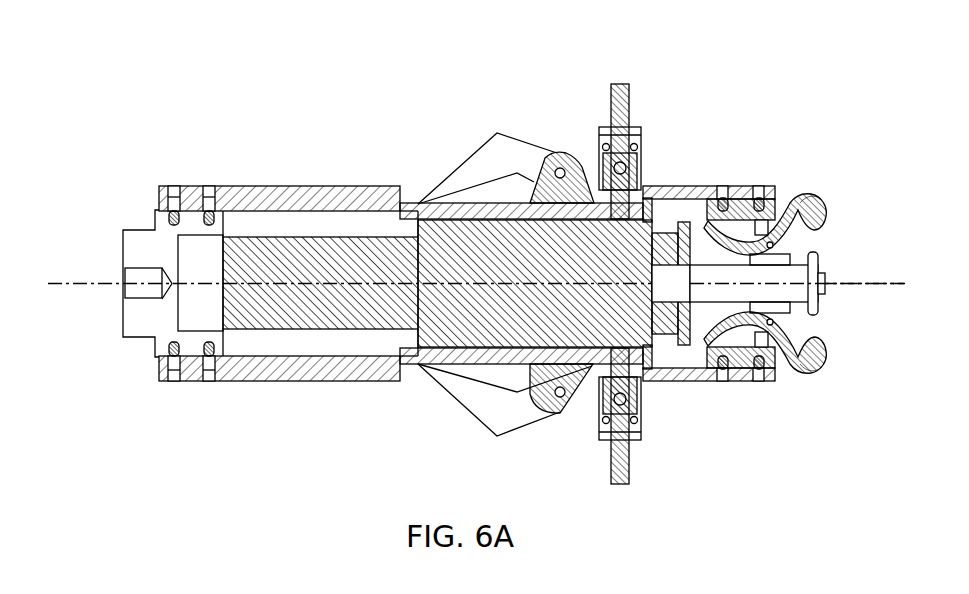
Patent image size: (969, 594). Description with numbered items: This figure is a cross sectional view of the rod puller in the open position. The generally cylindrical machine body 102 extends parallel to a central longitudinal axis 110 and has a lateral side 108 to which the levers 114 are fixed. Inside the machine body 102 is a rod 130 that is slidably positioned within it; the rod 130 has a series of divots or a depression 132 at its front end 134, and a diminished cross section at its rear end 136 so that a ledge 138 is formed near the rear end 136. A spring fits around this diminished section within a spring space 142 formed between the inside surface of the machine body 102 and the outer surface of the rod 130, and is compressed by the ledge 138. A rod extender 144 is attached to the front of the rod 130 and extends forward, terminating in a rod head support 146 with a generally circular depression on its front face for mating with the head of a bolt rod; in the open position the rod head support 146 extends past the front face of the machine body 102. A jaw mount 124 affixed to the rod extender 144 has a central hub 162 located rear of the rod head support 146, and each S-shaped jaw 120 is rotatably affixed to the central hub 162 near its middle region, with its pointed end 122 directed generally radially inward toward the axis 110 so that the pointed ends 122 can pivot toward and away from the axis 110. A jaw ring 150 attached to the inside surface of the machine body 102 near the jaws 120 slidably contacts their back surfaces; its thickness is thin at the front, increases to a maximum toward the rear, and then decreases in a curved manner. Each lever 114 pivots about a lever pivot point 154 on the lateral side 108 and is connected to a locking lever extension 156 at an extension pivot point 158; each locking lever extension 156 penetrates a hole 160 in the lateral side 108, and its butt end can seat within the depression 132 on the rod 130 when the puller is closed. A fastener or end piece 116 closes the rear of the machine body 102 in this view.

The machine body 102 is at (300, 380).
The lateral side 108 is at (325, 185).
The central longitudinal axis 110 is at (66, 278).
The lever 114 is at (513, 146).
The end cap 116 is at (143, 312).
The jaw 120 is at (788, 202).
The pointed end 122 is at (816, 203).
The jaw mount 124 is at (774, 310).
The rod 130 is at (352, 300).
The depression 132 is at (669, 364).
The front end of the rod 134 is at (650, 209).
The rear end of the rod 136 is at (268, 326).
The ledge 138 is at (418, 204).
The spring space 142 is at (292, 234).
The rod extender 144 is at (681, 296).
The rod head support 146 is at (824, 260).
The jaw ring 150 is at (730, 354).
The lever pivot point 154 is at (557, 153).
The locking lever extension 156 is at (617, 98).
The extension pivot point 158 is at (627, 130).
The hole 160 is at (598, 370).
The central hub 162 is at (819, 364).